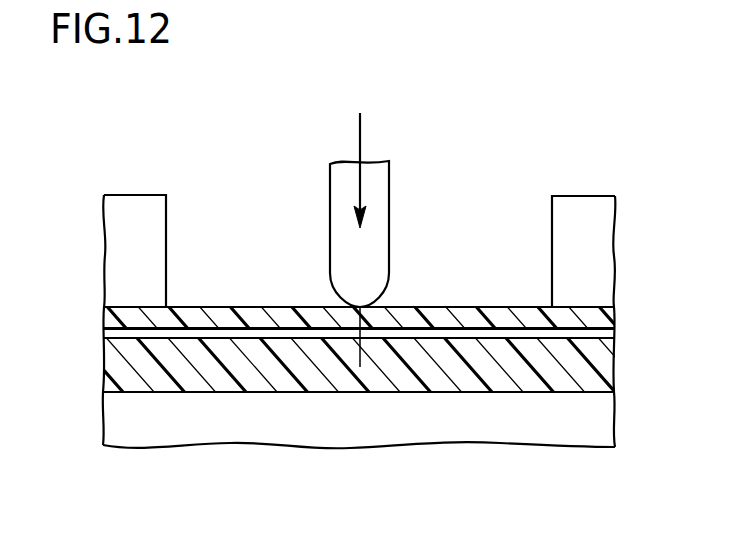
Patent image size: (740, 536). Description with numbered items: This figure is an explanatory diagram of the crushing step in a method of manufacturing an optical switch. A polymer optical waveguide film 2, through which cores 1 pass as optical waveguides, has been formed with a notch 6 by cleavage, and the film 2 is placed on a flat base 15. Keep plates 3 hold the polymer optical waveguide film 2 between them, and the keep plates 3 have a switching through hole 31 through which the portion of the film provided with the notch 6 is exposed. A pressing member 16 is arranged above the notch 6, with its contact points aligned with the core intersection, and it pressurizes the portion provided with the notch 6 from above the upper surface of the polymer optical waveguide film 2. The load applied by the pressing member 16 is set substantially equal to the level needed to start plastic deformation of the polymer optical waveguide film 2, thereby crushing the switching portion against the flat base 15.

The core 1 is at (270, 335).
The polymer optical waveguide film 2 is at (374, 313).
The keep plate 3 is at (131, 215).
The notch 6 is at (368, 355).
The flat base 15 is at (237, 425).
The pressing member 16 is at (376, 249).
The switching through hole 31 is at (212, 257).